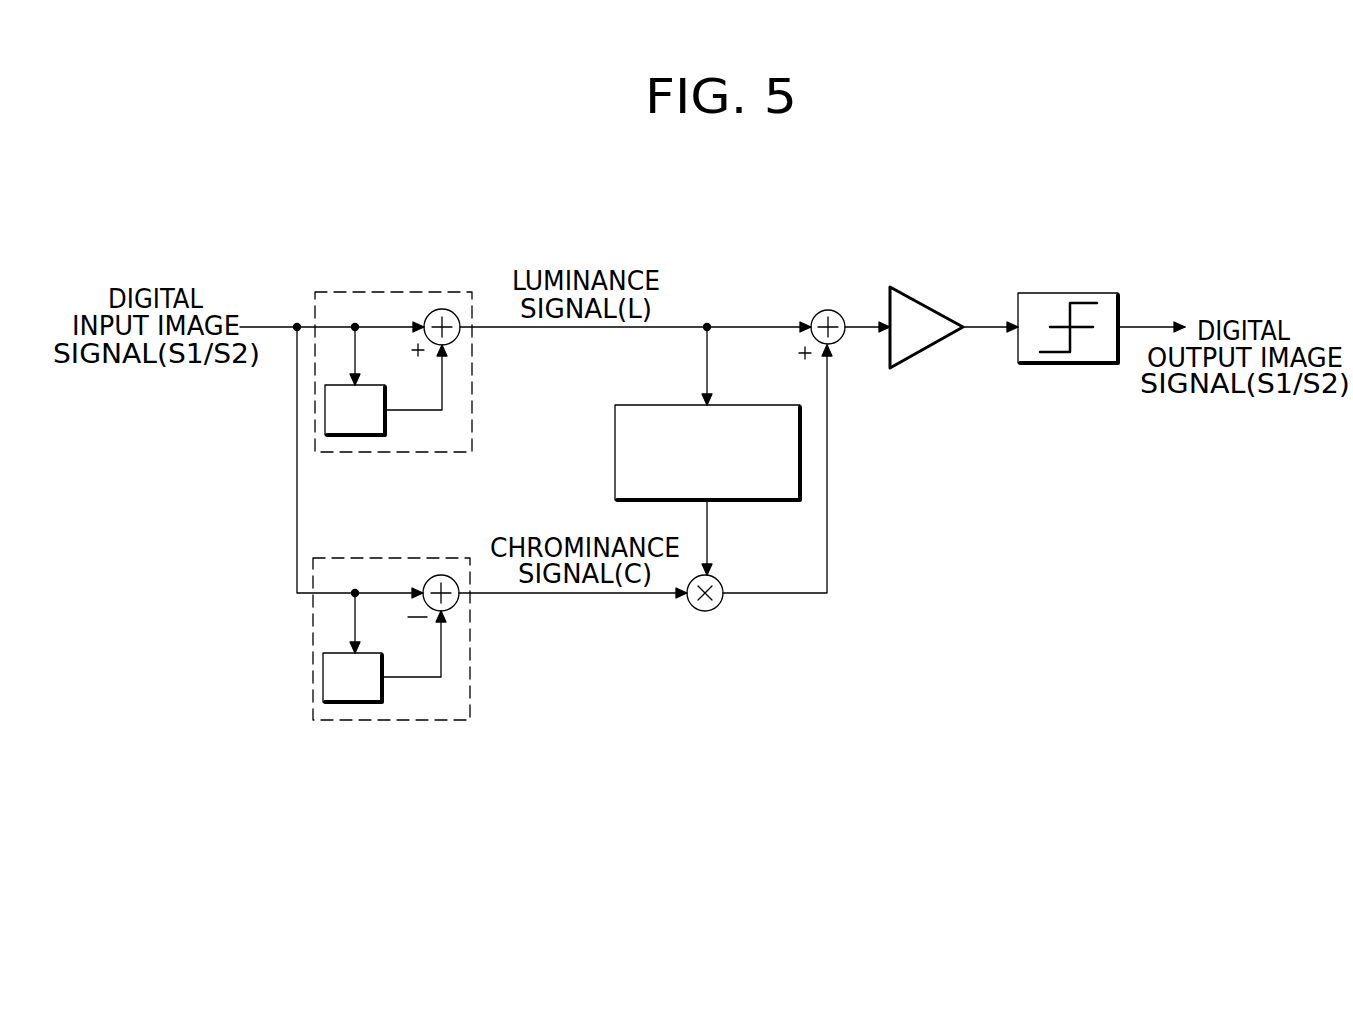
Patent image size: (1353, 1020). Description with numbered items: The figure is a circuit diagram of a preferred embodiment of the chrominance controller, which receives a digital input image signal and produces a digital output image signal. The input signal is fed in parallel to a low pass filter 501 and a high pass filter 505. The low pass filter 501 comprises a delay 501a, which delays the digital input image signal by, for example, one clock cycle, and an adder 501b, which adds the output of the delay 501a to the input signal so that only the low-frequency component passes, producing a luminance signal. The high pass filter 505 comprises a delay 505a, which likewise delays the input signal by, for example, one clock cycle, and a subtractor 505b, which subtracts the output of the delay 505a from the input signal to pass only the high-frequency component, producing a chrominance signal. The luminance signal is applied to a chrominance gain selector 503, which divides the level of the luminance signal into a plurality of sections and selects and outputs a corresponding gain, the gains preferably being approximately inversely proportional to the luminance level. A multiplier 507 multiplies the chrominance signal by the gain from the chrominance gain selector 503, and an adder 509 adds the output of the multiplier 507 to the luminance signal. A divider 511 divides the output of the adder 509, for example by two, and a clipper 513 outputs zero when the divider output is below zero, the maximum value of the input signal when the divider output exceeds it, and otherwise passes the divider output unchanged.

The low pass filter 501 is at (350, 292).
The delay 501a is at (355, 437).
The adder 501b is at (442, 308).
The chrominance gain selector 503 is at (615, 450).
The high pass filter 505 is at (449, 722).
The delay 505a is at (358, 705).
The subtractor 505b is at (441, 575).
The multiplier 507 is at (705, 611).
The adder 509 is at (828, 310).
The divider 511 is at (923, 305).
The clipper 513 is at (1070, 293).